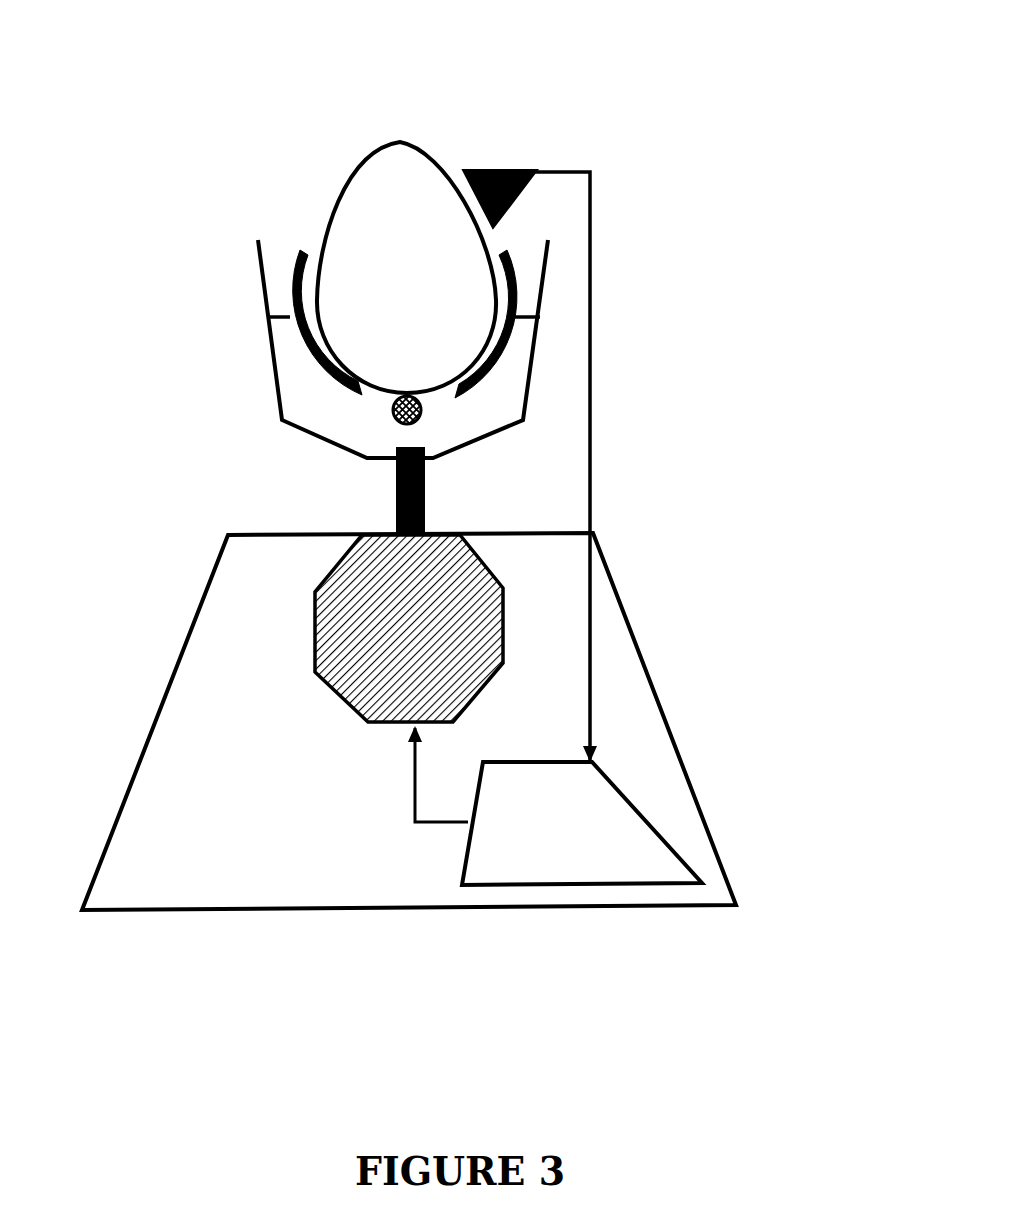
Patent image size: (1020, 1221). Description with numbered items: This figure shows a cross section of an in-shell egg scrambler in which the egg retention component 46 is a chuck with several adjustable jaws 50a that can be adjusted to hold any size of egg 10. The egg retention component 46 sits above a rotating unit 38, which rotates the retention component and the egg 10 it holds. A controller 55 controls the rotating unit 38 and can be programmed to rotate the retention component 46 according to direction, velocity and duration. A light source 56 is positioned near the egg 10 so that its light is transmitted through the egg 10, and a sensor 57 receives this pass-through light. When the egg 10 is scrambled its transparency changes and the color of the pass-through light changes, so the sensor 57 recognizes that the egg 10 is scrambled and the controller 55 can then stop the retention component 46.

The egg 10 is at (330, 183).
The sensor 57 is at (508, 166).
The egg retention component 46 is at (538, 392).
The adjustable jaws 50a is at (493, 338).
The light source 56 is at (425, 423).
The rotating unit 38 is at (353, 602).
The controller 55 is at (593, 823).